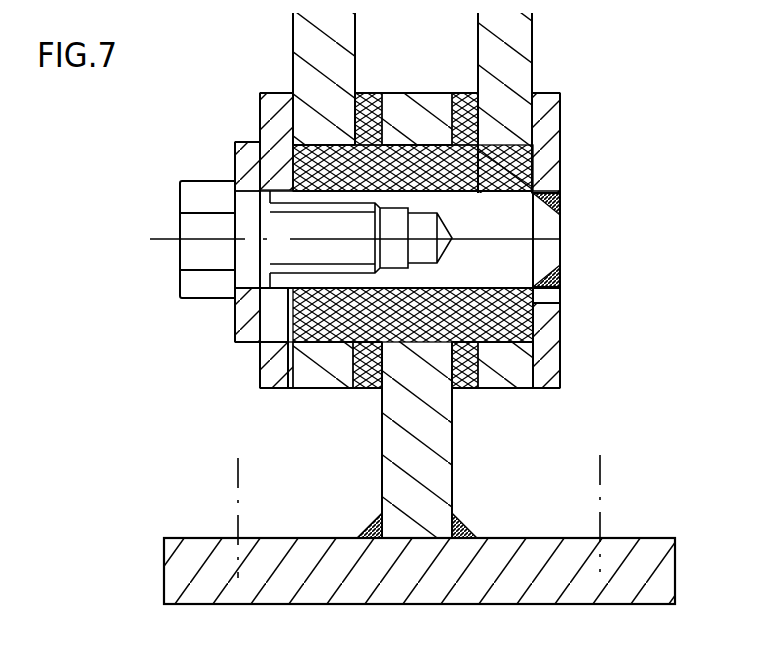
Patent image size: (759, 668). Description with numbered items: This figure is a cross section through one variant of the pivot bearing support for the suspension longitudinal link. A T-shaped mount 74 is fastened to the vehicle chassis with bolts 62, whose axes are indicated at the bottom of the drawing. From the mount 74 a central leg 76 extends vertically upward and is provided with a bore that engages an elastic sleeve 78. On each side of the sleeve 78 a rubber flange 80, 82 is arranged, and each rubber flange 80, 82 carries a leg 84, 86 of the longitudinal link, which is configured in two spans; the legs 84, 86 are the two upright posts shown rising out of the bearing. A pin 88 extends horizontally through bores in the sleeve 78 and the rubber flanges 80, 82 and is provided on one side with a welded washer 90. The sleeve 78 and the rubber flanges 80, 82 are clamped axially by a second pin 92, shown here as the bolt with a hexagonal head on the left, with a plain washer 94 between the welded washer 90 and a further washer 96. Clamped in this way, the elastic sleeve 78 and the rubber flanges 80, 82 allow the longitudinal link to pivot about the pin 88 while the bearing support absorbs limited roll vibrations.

The bolts 62 is at (240, 482).
The T-shaped mount 74 is at (327, 562).
The central leg 76 is at (425, 455).
The elastic sleeve 78 is at (560, 303).
The rubber flange 80 is at (288, 148).
The rubber flange 82 is at (530, 173).
The leg of longitudinal link 84 is at (308, 33).
The leg of longitudinal link 86 is at (513, 52).
The pin 88 is at (503, 220).
The welded washer 90 is at (543, 115).
The pin 92 is at (272, 250).
The plain washer 94 is at (232, 343).
The further washer 96 is at (260, 388).